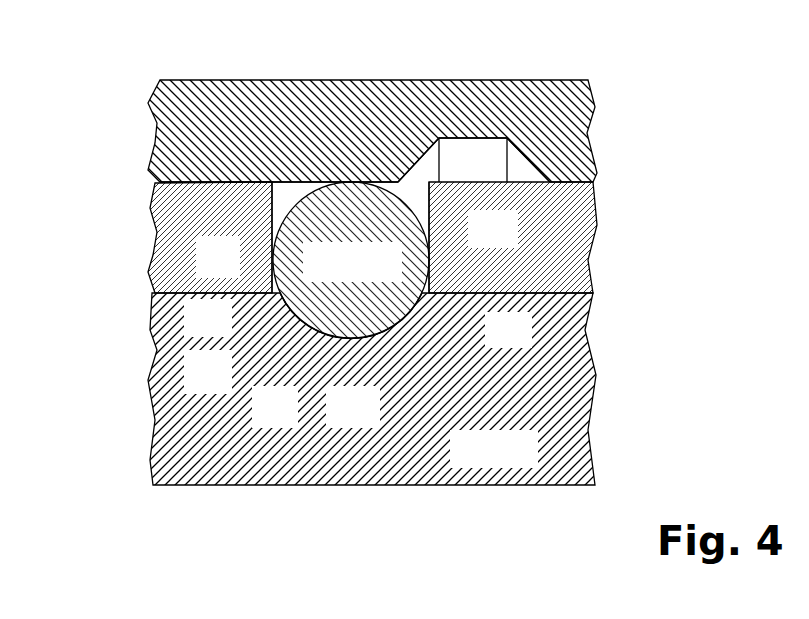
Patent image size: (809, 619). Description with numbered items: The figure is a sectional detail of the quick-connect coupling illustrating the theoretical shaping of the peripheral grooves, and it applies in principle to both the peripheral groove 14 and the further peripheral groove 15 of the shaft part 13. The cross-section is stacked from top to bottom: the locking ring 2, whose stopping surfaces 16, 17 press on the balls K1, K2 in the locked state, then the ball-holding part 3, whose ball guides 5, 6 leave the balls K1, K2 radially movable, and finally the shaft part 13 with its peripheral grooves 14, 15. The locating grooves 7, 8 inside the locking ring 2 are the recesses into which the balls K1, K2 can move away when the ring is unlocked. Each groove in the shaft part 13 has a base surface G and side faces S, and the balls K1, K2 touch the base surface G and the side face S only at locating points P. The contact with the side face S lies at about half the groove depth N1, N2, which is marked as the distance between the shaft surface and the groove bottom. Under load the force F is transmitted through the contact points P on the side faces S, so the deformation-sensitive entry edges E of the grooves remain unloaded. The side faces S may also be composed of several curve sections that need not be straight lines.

The locking ring 2 is at (537, 118).
The ball-holding part 3 is at (550, 239).
The ball guide 5 is at (395, 237).
The ball guide 6 is at (431, 228).
The locating groove 7 is at (485, 97).
The locating groove 8 is at (473, 150).
The shaft part 13 is at (400, 452).
The peripheral groove 14 is at (409, 380).
The further peripheral groove 15 is at (413, 365).
The stopping surface 16 is at (279, 99).
The stopping surface 17 is at (287, 178).
The ball K1 is at (351, 260).
The further ball K2 is at (351, 260).
The entry edge E is at (276, 300).
The side face S is at (274, 304).
The locating point P is at (338, 343).
The base surface G is at (330, 345).
The force F is at (137, 204).
The groove depth N1 is at (173, 315).
The groove depth N2 is at (338, 339).